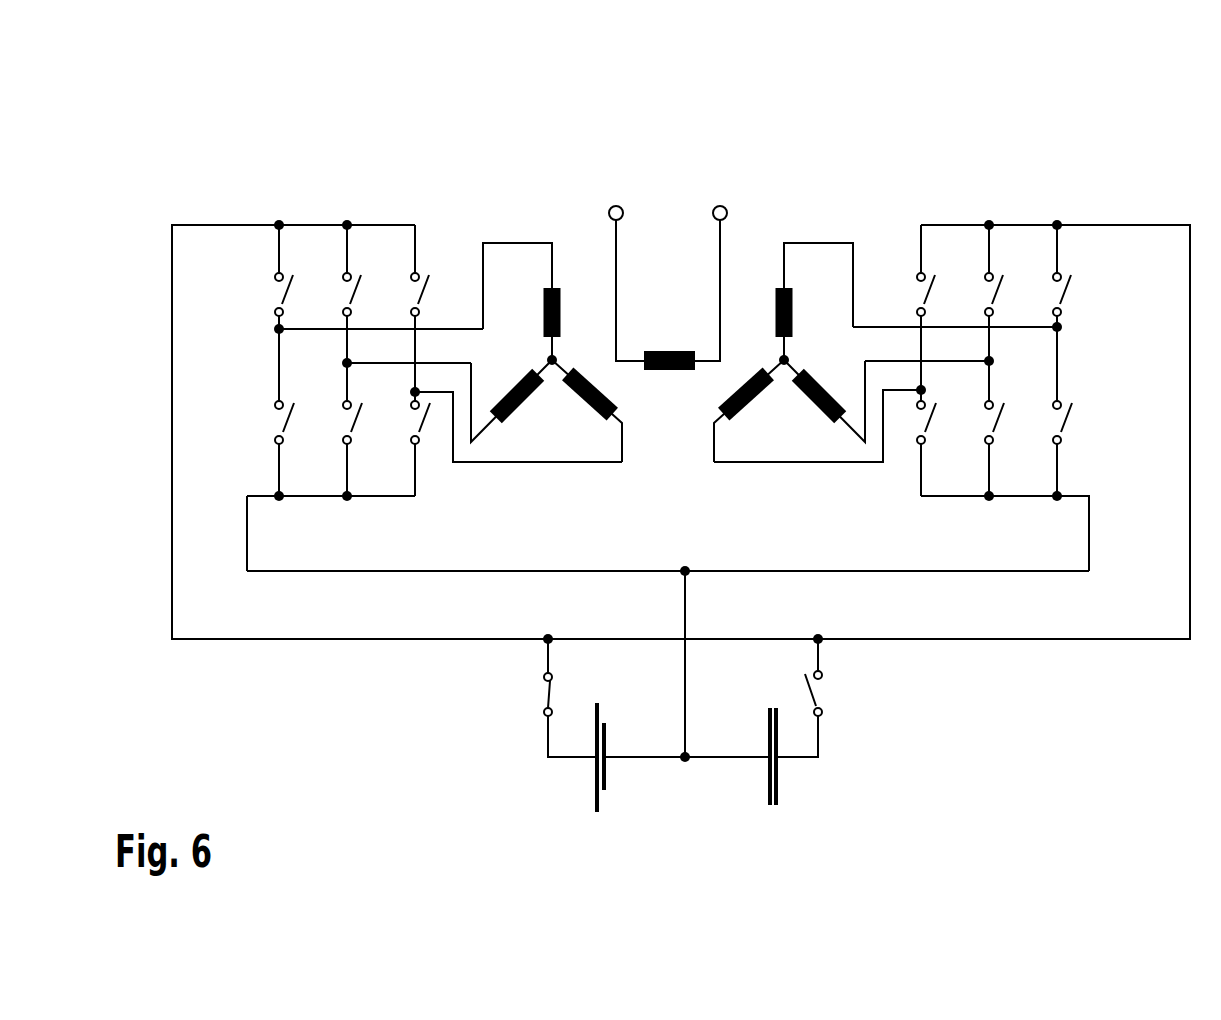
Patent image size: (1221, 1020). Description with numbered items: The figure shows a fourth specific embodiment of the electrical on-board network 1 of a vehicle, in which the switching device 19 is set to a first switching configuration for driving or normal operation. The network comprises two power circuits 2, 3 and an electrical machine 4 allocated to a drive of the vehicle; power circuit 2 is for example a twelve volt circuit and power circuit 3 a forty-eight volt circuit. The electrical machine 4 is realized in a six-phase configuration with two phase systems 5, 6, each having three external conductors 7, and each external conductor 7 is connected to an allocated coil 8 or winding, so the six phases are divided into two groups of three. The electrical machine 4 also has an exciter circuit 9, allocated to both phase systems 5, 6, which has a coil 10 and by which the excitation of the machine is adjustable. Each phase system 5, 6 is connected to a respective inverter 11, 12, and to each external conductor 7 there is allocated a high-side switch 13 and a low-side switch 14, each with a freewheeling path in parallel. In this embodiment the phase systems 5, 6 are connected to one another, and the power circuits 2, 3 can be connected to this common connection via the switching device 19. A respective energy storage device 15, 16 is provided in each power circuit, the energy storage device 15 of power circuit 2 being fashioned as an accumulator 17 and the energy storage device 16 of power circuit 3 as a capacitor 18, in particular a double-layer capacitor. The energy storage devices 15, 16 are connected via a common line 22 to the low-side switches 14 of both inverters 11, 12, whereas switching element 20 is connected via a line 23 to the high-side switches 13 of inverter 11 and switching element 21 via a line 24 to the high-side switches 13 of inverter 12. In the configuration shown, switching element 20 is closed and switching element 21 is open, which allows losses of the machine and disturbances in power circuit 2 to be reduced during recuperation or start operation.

The on-board network 1 is at (681, 469).
The power circuit 2 is at (630, 790).
The power circuit 3 is at (800, 791).
The electrical machine 4 is at (642, 317).
The phase system 5 is at (470, 208).
The phase system 6 is at (770, 183).
The external conductor 7 is at (517, 243).
The coil 8 is at (556, 290).
The exciter circuit 9 is at (663, 195).
The coil 10 is at (665, 350).
The inverter 11 is at (345, 172).
The inverter 12 is at (1040, 195).
The high-side switch 13 is at (275, 297).
The low-side switch 14 is at (285, 420).
The energy storage device 15 is at (649, 774).
The energy storage device 16 is at (800, 760).
The accumulator 17 is at (608, 768).
The capacitor 18 is at (780, 762).
The switching device 19 is at (668, 721).
The switching element 20 is at (548, 693).
The switching element 21 is at (820, 692).
The common line 22 is at (687, 606).
The line 23 is at (348, 641).
The line 24 is at (1085, 641).